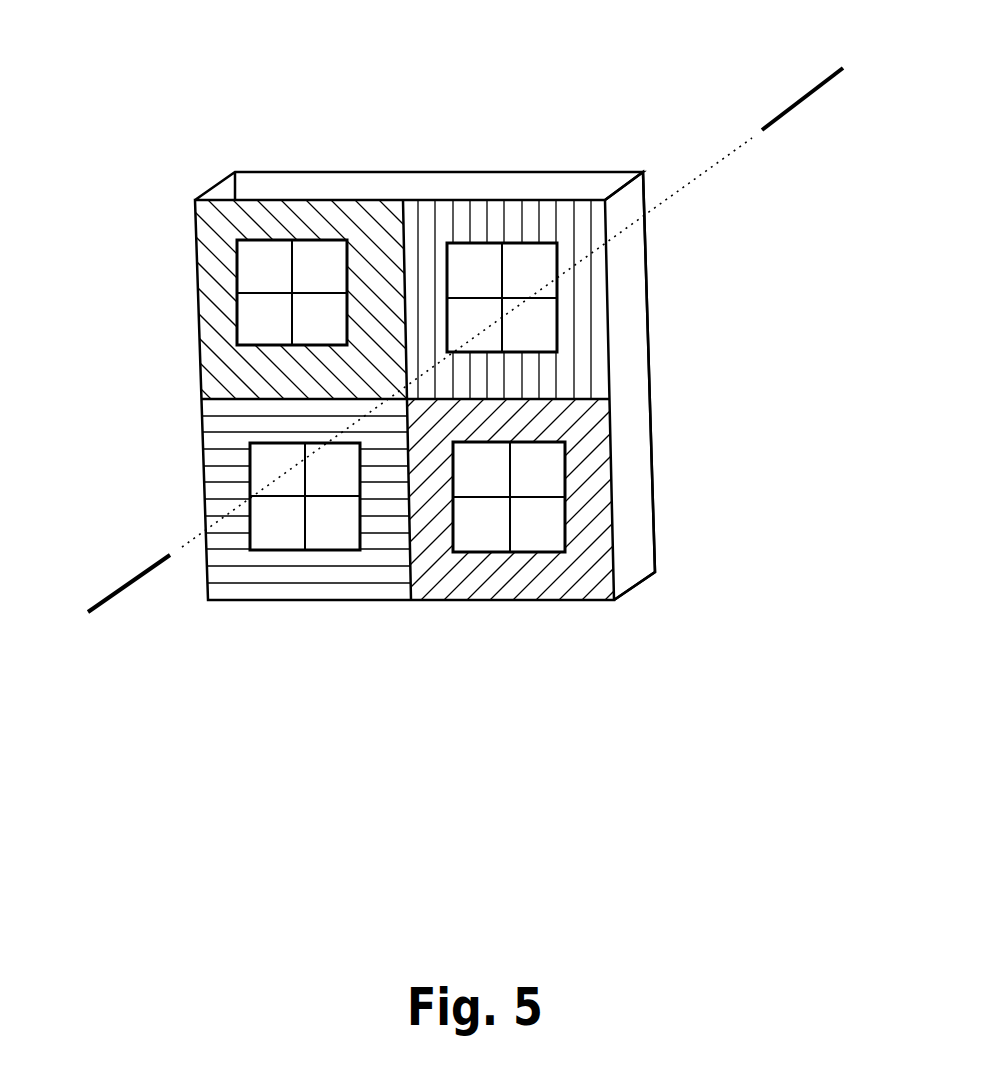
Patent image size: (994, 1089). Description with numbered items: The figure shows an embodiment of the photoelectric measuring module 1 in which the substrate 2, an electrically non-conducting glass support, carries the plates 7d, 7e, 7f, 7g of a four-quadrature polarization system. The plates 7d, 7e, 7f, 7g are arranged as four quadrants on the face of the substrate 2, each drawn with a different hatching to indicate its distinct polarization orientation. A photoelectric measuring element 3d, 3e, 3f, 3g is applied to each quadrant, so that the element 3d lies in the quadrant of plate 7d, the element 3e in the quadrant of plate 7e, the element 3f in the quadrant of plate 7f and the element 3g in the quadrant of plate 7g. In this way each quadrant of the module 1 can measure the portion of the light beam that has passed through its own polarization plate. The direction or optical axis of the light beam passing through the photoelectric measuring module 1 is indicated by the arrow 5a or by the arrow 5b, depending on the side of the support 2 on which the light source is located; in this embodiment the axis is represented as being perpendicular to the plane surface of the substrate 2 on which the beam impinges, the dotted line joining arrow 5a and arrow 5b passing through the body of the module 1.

The photoelectric measuring module 1 is at (652, 620).
The substrate 2 is at (630, 393).
The photoelectric measuring element 3d is at (538, 257).
The photoelectric measuring element 3e is at (332, 257).
The photoelectric measuring element 3f is at (293, 523).
The photoelectric measuring element 3g is at (510, 528).
The plate 7d is at (440, 220).
The plate 7e is at (222, 195).
The plate 7f is at (393, 563).
The plate 7g is at (610, 560).
The arrow 5a is at (828, 85).
The arrow 5b is at (107, 605).